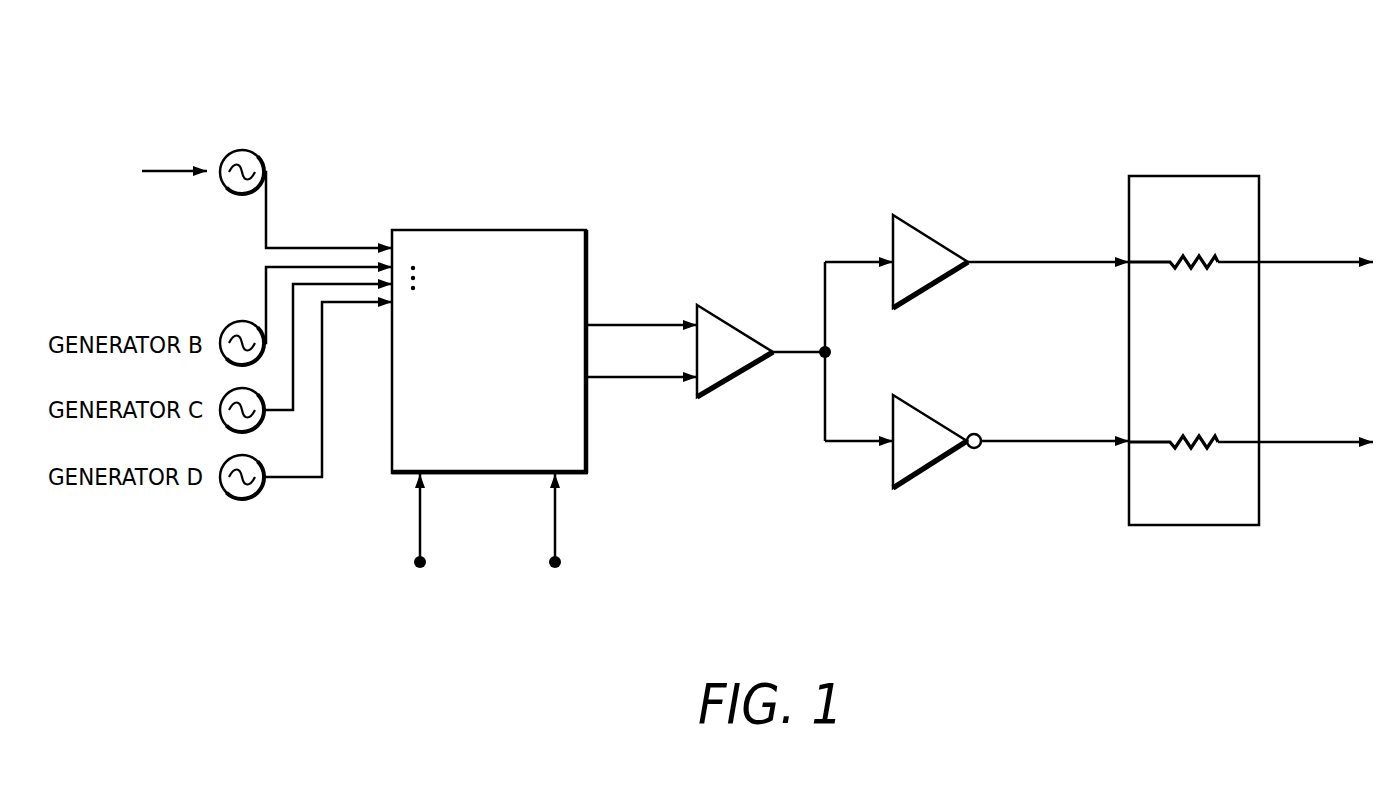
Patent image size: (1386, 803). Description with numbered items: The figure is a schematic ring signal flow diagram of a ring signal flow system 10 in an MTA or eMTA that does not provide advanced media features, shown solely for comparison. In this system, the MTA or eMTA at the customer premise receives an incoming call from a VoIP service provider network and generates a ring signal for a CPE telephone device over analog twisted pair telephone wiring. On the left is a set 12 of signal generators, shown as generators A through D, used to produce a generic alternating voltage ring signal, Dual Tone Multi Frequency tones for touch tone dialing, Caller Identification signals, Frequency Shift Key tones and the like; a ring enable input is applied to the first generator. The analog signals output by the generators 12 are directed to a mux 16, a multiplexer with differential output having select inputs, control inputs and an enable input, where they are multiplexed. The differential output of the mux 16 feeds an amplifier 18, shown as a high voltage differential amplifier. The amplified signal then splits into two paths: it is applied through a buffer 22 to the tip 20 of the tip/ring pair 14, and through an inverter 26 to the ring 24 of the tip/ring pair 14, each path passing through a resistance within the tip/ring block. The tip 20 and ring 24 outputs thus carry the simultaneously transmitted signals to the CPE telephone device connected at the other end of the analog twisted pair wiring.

The ring signal flow system 10 is at (1316, 101).
The set of signal generators 12 is at (244, 194).
The tip/ring pair 14 is at (1129, 350).
The mux 16 is at (573, 473).
The amplifier 18 is at (746, 379).
The tip 20 is at (1299, 265).
The buffer 22 is at (933, 287).
The ring 24 is at (1299, 446).
The inverter 26 is at (930, 416).